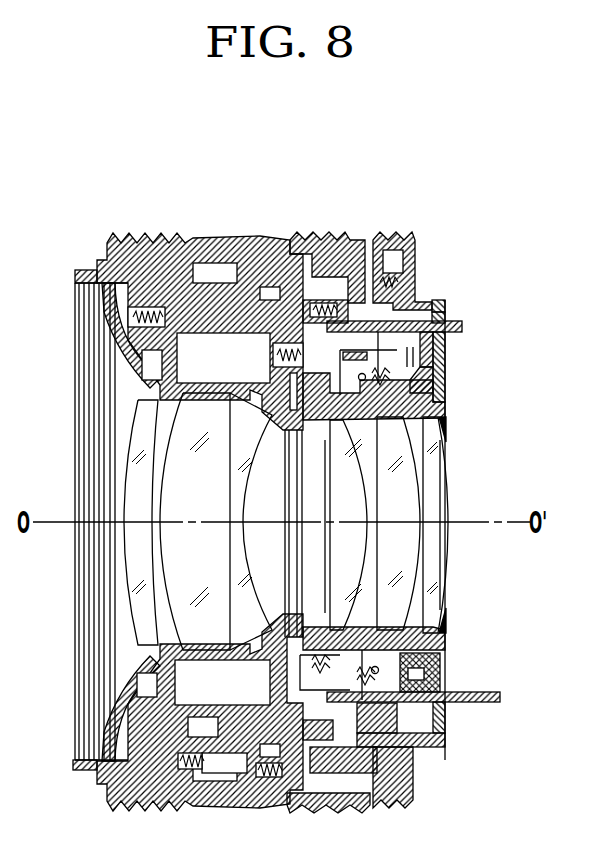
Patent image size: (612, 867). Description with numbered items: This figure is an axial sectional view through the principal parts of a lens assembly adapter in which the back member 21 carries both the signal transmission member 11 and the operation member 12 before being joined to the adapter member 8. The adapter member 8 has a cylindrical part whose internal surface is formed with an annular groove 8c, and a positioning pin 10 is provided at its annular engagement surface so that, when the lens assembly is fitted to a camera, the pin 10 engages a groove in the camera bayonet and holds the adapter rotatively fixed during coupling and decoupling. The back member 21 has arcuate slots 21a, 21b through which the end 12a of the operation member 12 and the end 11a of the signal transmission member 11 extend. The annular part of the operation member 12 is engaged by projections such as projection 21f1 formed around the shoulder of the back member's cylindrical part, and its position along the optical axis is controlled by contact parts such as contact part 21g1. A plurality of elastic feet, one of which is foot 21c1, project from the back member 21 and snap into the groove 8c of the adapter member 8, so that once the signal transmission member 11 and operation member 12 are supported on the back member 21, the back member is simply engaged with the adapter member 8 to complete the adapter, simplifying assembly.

The positioning pin 10 is at (403, 283).
The adapter member 8 is at (440, 304).
The arcuate slot 21b is at (447, 318).
The signal transmission member 11 is at (463, 326).
The back member 21 is at (446, 358).
The end of signal transmission member 11a is at (444, 373).
The projection 21f1 is at (445, 405).
The contact part 21g1 is at (446, 638).
The end of operation member 12a is at (436, 682).
The operation member 12 is at (500, 697).
The arcuate slot 21a is at (444, 713).
The foot 21c1 is at (444, 742).
The annular groove 8c is at (413, 748).